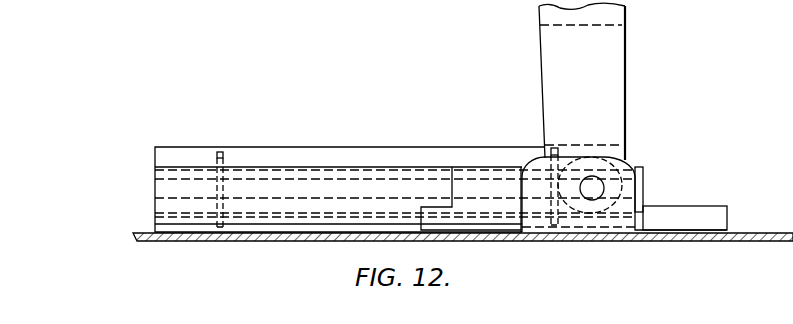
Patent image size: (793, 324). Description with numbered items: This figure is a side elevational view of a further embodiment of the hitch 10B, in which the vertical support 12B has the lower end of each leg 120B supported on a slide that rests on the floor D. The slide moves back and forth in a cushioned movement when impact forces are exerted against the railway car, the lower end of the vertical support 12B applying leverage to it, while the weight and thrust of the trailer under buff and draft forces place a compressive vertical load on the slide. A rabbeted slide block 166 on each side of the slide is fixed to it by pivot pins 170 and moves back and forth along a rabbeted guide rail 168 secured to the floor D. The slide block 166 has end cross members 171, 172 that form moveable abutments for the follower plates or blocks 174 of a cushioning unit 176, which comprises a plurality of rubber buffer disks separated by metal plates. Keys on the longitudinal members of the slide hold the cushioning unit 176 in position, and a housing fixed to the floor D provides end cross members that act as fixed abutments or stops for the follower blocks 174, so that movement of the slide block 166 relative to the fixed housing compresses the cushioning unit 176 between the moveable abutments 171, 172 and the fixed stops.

The hitch 10B is at (628, 21).
The vertical support 12B is at (548, 50).
The leg 120B is at (615, 130).
The rabbeted slide block 166 is at (600, 222).
The rabbeted guide rail 168 is at (682, 206).
The pivot pin 170 is at (593, 181).
The end cross member 171 is at (172, 193).
The end cross member 172 is at (643, 178).
The follower block 174 is at (217, 189).
The cushioning unit 176 is at (313, 190).
The floor D is at (738, 241).